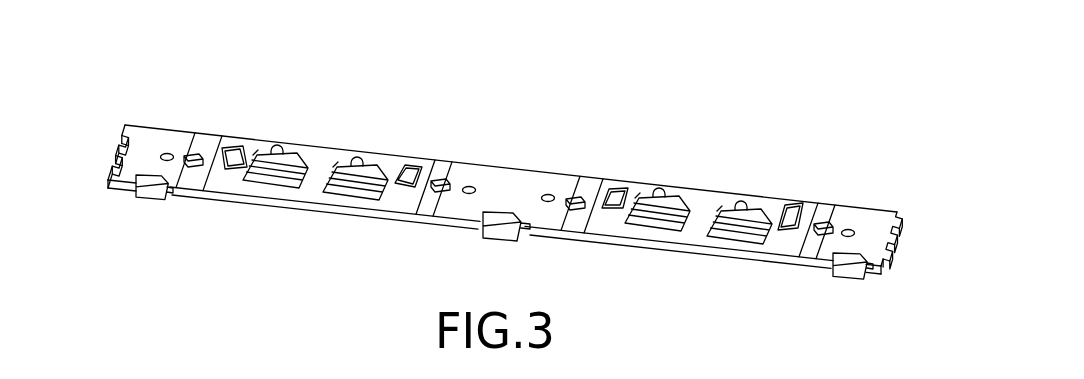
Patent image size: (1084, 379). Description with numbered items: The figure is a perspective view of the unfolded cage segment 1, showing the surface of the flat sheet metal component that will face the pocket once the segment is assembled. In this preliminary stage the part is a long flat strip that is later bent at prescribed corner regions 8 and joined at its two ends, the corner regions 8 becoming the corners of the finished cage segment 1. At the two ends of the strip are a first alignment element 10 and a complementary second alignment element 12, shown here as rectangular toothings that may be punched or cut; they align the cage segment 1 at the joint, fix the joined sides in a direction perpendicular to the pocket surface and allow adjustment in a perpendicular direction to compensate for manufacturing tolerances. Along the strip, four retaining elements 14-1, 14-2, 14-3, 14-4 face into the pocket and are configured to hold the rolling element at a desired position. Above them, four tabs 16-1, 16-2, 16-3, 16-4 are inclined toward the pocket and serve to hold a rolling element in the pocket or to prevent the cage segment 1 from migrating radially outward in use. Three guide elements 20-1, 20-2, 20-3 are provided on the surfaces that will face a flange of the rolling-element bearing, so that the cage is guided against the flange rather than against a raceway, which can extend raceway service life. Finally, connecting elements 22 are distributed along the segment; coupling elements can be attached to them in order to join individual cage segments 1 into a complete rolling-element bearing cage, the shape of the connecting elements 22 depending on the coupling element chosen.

The cage segment 1 is at (775, 113).
The corner regions 8 is at (200, 136).
The first alignment element 10 is at (912, 200).
The second alignment element 12 is at (119, 133).
The retaining element 14-1 is at (262, 156).
The retaining element 14-2 is at (333, 167).
The retaining element 14-3 is at (640, 195).
The retaining element 14-4 is at (725, 205).
The tab 16-1 is at (279, 148).
The tab 16-2 is at (366, 157).
The tab 16-3 is at (665, 192).
The tab 16-4 is at (755, 195).
The guide element 20-1 is at (497, 240).
The guide element 20-2 is at (840, 278).
The guide element 20-3 is at (143, 197).
The connecting elements 22 is at (165, 152).